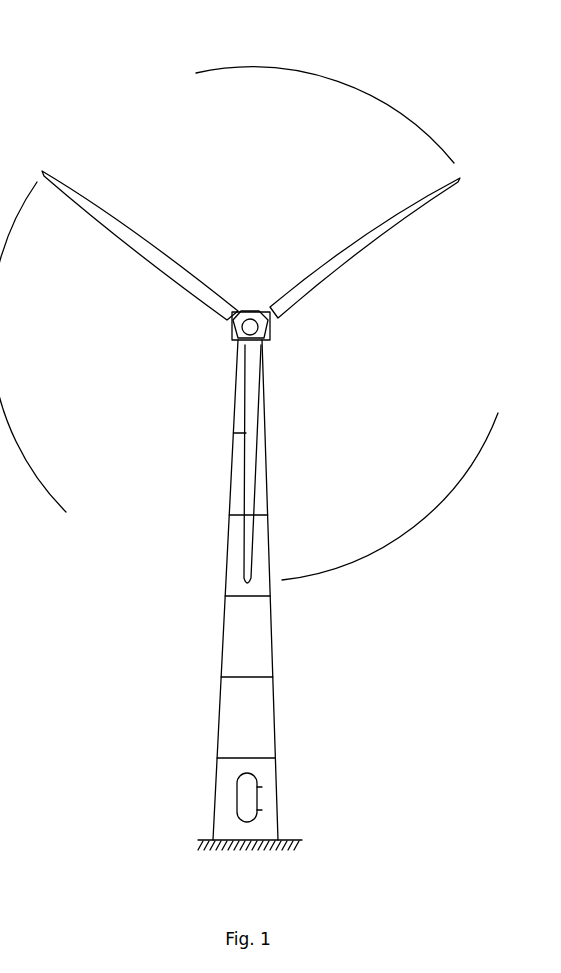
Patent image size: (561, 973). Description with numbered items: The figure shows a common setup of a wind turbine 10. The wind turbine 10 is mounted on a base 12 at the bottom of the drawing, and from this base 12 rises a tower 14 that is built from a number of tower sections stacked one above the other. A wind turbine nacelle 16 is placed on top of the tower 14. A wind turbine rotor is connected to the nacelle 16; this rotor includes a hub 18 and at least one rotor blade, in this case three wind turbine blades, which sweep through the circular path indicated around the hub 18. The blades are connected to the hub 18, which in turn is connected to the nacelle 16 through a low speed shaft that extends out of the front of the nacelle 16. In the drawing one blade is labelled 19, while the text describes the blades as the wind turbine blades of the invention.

The wind turbine 10 is at (488, 41).
The base 12 is at (197, 838).
The tower 14 is at (264, 650).
The wind turbine nacelle 16 is at (268, 332).
The hub 18 is at (247, 328).
The rotor blade 19 is at (375, 238).